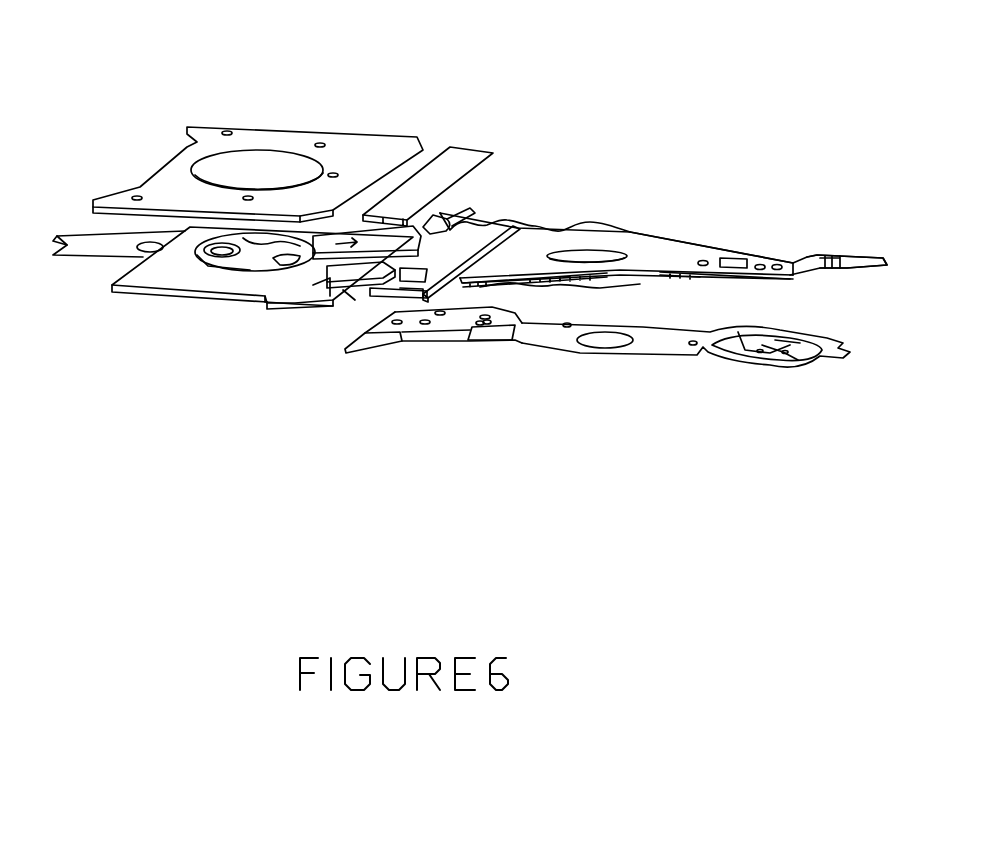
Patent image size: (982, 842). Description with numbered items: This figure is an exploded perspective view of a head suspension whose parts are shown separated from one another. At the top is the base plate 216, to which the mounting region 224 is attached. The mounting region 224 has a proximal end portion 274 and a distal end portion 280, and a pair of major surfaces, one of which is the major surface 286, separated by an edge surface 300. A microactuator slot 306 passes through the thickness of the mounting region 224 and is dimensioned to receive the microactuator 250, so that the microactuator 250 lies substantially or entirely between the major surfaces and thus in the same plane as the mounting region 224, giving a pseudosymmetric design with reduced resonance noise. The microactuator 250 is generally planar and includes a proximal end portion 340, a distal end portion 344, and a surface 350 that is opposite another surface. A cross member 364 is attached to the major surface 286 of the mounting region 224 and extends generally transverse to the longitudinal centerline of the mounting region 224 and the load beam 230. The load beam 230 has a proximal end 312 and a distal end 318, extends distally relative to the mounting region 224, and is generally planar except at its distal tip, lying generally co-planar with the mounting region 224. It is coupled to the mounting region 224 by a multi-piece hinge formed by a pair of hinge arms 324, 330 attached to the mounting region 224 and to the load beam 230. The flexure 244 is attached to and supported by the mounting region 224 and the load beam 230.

The base plate 216 is at (257, 120).
The proximal end portion 340 is at (348, 225).
The cross member 364 is at (456, 147).
The distal end portion 344 is at (487, 210).
The distal end portion 280 is at (487, 220).
The surface 350 is at (490, 233).
The proximal end 312 is at (600, 237).
The load beam 230 is at (695, 247).
The distal end 318 is at (780, 258).
The proximal end portion 274 is at (130, 296).
The major surface 286 is at (213, 283).
The edge surface 300 is at (253, 303).
The microactuator 250 is at (340, 250).
The microactuator slot 306 is at (352, 300).
The mounting region 224 is at (155, 300).
The hinge arm 324 is at (580, 287).
The hinge arm 330 is at (515, 312).
The flexure 244 is at (590, 360).